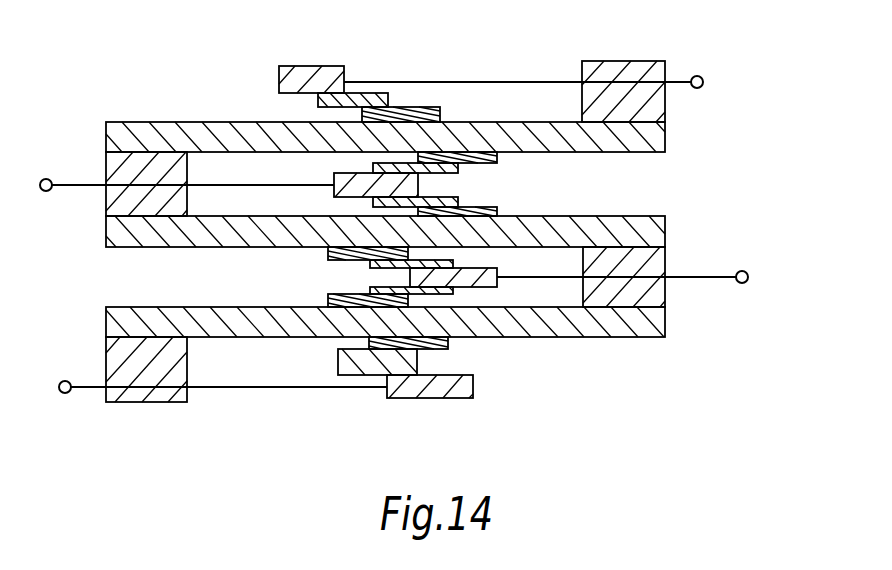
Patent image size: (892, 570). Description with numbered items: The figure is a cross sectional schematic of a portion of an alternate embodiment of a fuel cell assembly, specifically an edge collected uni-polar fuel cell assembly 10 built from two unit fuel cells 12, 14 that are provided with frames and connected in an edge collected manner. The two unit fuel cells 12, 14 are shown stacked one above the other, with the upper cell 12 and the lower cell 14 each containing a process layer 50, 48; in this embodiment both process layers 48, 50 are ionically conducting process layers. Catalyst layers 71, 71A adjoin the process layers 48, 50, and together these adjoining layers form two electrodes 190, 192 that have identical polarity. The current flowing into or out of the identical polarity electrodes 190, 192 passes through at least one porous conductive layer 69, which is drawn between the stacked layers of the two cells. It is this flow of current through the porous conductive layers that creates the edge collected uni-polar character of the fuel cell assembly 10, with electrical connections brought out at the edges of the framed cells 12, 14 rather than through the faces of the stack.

The edge collected uni-polar fuel cell assembly 10 is at (93, 43).
The unit fuel cell 12 is at (757, 61).
The unit fuel cell 14 is at (757, 221).
The process layer 48 is at (666, 237).
The process layer 50 is at (666, 143).
The porous conductive layer 69 is at (349, 178).
The catalyst layer 71 is at (482, 162).
The catalyst layer 71A is at (483, 208).
The identical polarity electrode 190 is at (462, 168).
The identical polarity electrode 192 is at (462, 204).